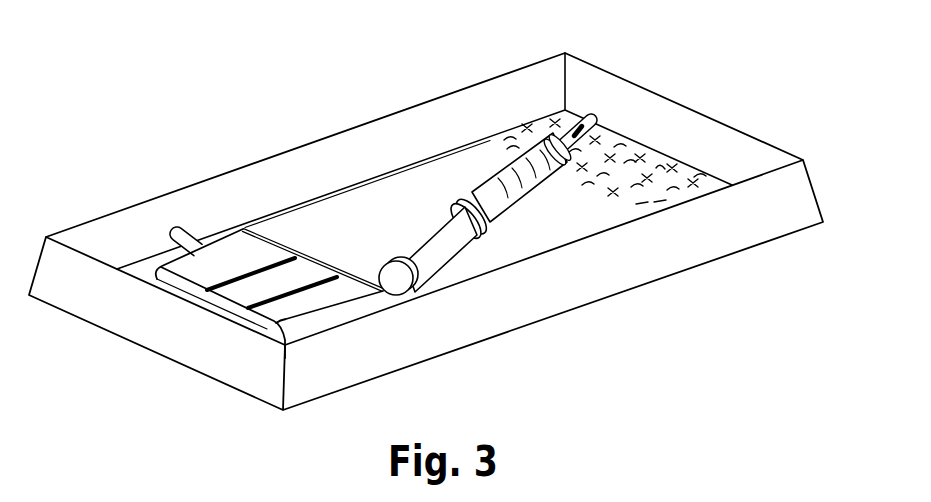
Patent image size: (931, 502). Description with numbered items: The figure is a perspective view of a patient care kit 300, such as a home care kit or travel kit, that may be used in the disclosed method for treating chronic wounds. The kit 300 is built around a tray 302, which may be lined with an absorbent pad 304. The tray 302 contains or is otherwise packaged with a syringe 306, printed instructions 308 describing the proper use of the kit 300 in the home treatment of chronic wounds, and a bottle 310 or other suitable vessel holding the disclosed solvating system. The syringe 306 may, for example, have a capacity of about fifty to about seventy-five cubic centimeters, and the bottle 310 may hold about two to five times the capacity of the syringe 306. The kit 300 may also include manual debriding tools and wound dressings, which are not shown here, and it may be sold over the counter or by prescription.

The patient care kit 300 is at (252, 83).
The tray 302 is at (622, 173).
The absorbent pad 304 is at (752, 137).
The syringe 306 is at (476, 187).
The printed instructions 308 is at (352, 217).
The bottle 310 is at (232, 267).